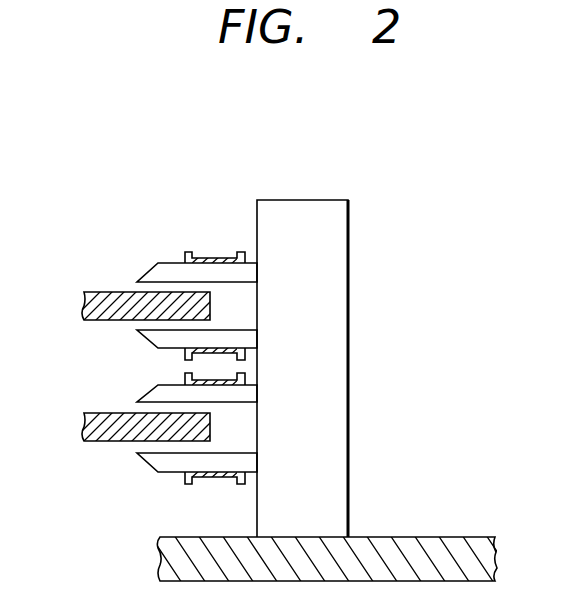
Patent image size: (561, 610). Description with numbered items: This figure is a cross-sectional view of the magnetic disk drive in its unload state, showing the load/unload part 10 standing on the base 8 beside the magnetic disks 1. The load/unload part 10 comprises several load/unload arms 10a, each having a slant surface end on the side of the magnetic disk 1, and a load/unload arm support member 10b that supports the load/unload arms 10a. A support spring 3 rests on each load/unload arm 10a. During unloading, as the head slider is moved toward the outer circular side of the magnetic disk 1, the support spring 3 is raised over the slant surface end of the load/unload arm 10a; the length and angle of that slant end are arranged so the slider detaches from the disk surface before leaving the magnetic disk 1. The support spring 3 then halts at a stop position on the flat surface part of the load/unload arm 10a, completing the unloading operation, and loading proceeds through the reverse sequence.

The magnetic disk 1 is at (82, 305).
The support spring 3 is at (190, 254).
The base 8 is at (447, 540).
The load/unload part 10 is at (483, 155).
The load/unload arm 10a is at (162, 272).
The load/unload arm support member 10b is at (332, 303).